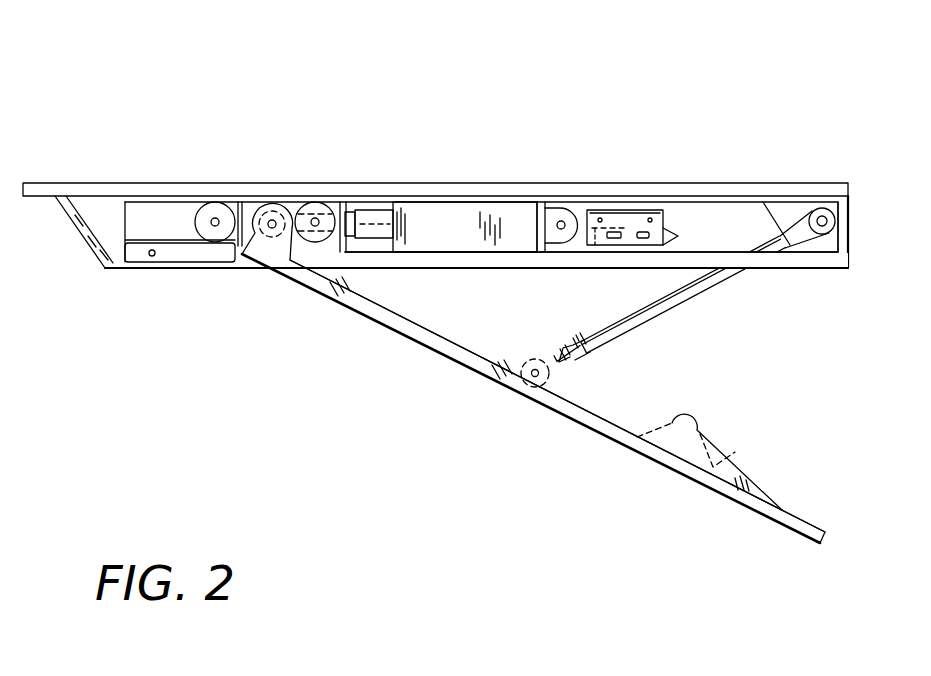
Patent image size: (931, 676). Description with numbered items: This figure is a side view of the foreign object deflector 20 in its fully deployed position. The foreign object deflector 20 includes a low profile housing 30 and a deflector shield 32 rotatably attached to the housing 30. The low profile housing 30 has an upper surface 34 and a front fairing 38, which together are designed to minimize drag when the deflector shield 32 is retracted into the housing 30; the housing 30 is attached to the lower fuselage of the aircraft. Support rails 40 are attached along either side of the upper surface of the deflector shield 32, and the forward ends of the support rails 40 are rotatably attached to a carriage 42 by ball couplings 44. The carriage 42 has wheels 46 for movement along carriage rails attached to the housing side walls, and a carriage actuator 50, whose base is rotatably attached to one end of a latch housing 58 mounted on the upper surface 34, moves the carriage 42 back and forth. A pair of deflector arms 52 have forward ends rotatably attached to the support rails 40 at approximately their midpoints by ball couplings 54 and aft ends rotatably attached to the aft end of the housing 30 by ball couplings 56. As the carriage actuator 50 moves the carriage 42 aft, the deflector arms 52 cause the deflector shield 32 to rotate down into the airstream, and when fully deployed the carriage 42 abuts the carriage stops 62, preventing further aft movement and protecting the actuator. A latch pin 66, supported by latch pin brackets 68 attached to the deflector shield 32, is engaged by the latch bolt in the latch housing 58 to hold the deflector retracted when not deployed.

The foreign object deflector 20 is at (531, 150).
The low profile housing 30 is at (117, 172).
The deflector shield 32 is at (590, 430).
The upper surface 34 is at (708, 183).
The front fairing 38 is at (88, 250).
The support rails 40 is at (637, 405).
The carriage 42 is at (176, 200).
The ball couplings 44 is at (272, 228).
The wheels 46 is at (317, 205).
The carriage actuator 50 is at (457, 212).
The deflector arms 52 is at (700, 300).
The ball couplings 54 is at (535, 360).
The ball couplings 56 is at (822, 215).
The latch housing 58 is at (620, 210).
The carriage stops 62 is at (352, 205).
The latch pin 66 is at (690, 421).
The latch pin brackets 68 is at (737, 444).